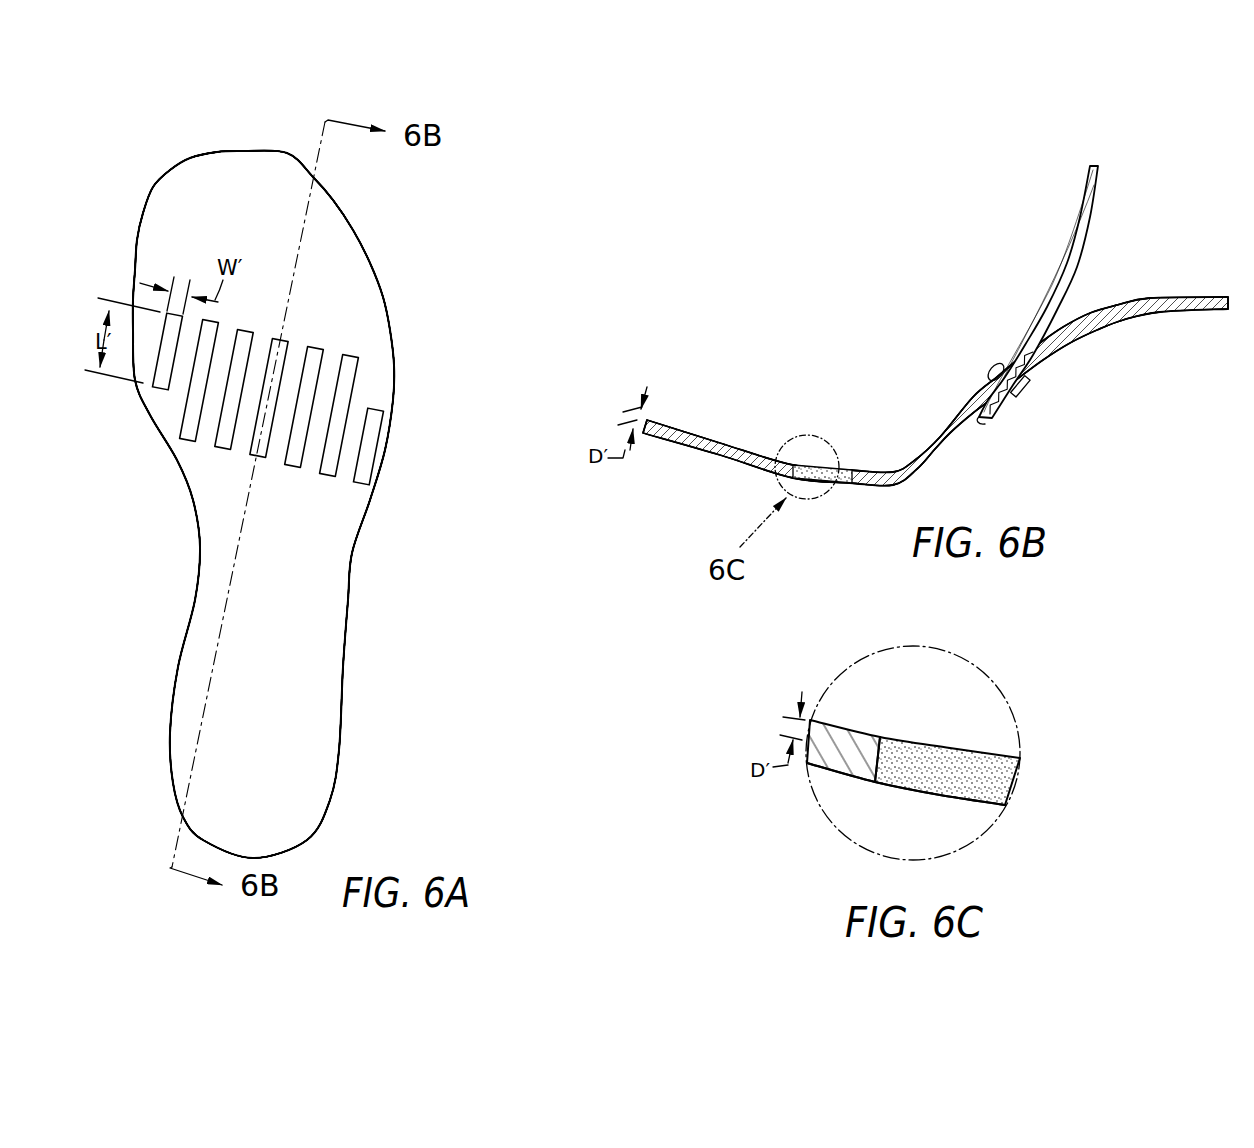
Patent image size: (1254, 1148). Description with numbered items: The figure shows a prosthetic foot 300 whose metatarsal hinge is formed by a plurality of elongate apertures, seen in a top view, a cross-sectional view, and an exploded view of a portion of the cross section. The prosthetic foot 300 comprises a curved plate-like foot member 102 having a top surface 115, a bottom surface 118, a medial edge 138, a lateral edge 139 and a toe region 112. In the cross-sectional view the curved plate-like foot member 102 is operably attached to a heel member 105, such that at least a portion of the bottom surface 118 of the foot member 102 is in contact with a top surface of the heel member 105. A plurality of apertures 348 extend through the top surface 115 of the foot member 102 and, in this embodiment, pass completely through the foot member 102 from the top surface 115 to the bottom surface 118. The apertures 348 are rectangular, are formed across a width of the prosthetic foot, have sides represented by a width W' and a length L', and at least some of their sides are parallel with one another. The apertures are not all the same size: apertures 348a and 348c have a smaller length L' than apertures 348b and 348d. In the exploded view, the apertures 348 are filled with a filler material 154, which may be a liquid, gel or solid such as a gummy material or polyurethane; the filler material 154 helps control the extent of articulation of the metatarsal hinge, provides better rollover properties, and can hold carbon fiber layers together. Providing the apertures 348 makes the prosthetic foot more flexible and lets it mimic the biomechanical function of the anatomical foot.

In FIG. 6A, the curved plate-like foot member 102 is at (333, 199).
In FIG. 6B, the curved plate-like foot member 102 is at (1083, 194).
In FIG. 6B, the heel member 105 is at (1140, 313).
In FIG. 6A, the toe region 112 is at (190, 158).
In FIG. 6A, the top surface 115 is at (323, 777).
In FIG. 6B, the top surface 115 is at (970, 410).
In FIG. 6B, the bottom surface 118 is at (943, 450).
In FIG. 6C, the bottom surface 118 is at (963, 802).
In FIG. 6A, the medial edge 138 is at (134, 283).
In FIG. 6A, the lateral edge 139 is at (370, 263).
In FIG. 6C, the filler material 154 is at (912, 758).
In FIG. 6A, the prosthetic foot 300 is at (340, 665).
In FIG. 6A, the apertures 348 is at (150, 372).
In FIG. 6B, the apertures 348 is at (817, 458).
In FIG. 6C, the apertures 348 is at (888, 788).
In FIG. 6A, the aperture 348a is at (378, 428).
In FIG. 6A, the aperture 348b is at (362, 365).
In FIG. 6A, the aperture 348c is at (160, 390).
In FIG. 6A, the aperture 348d is at (188, 443).